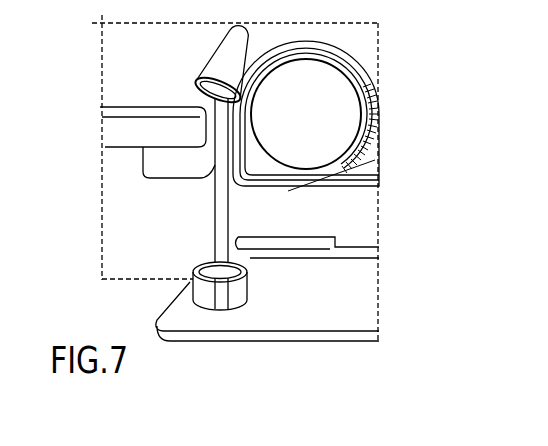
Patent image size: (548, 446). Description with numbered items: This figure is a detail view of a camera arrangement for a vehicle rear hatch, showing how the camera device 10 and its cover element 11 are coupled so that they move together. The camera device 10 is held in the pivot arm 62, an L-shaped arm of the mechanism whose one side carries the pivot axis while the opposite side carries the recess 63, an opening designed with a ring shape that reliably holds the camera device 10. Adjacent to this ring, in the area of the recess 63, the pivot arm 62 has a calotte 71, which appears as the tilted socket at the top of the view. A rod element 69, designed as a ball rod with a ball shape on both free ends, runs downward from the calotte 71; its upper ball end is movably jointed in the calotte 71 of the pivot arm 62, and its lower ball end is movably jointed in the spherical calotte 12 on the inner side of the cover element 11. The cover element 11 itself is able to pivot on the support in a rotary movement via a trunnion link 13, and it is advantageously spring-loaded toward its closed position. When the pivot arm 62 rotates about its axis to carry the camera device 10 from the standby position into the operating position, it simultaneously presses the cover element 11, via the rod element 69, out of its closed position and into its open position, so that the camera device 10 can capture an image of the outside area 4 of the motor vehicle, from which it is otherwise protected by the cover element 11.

The outside area 4 is at (365, 390).
The camera device 10 is at (376, 172).
The cover element 11 is at (282, 332).
The spherical calotte 12 is at (243, 308).
The trunnion link 13 is at (379, 250).
The pivot arm 62 is at (360, 114).
The recess 63 is at (423, 150).
The rod element 69 is at (214, 212).
The calotte 71 is at (223, 63).